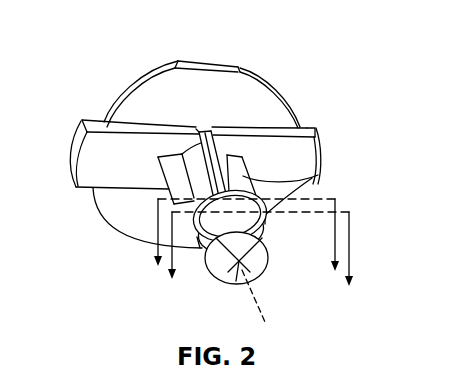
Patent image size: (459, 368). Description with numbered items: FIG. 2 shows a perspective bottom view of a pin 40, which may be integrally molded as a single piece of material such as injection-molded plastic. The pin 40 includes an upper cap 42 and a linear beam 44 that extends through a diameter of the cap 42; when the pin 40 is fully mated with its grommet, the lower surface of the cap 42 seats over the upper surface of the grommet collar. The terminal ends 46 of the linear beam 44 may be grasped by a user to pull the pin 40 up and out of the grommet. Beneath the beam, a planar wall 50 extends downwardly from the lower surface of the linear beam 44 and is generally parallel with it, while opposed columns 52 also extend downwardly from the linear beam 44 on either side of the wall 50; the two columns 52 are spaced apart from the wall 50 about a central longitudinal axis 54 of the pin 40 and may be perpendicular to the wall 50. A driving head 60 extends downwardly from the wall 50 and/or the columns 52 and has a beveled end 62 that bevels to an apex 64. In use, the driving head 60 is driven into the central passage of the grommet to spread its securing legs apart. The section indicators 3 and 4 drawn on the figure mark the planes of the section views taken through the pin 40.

The pin 40 is at (119, 44).
The upper cap 42 is at (261, 71).
The linear beam 44 is at (84, 168).
The terminal ends 46 is at (80, 133).
The planar wall 50 is at (161, 194).
The columns 52 is at (319, 175).
The central longitudinal axis 54 is at (261, 309).
The driving head 60 is at (226, 278).
The beveled end 62 is at (261, 263).
The apex 64 is at (240, 279).
The section line 3- 3 is at (246, 250).
The section line 4- 4 is at (262, 262).